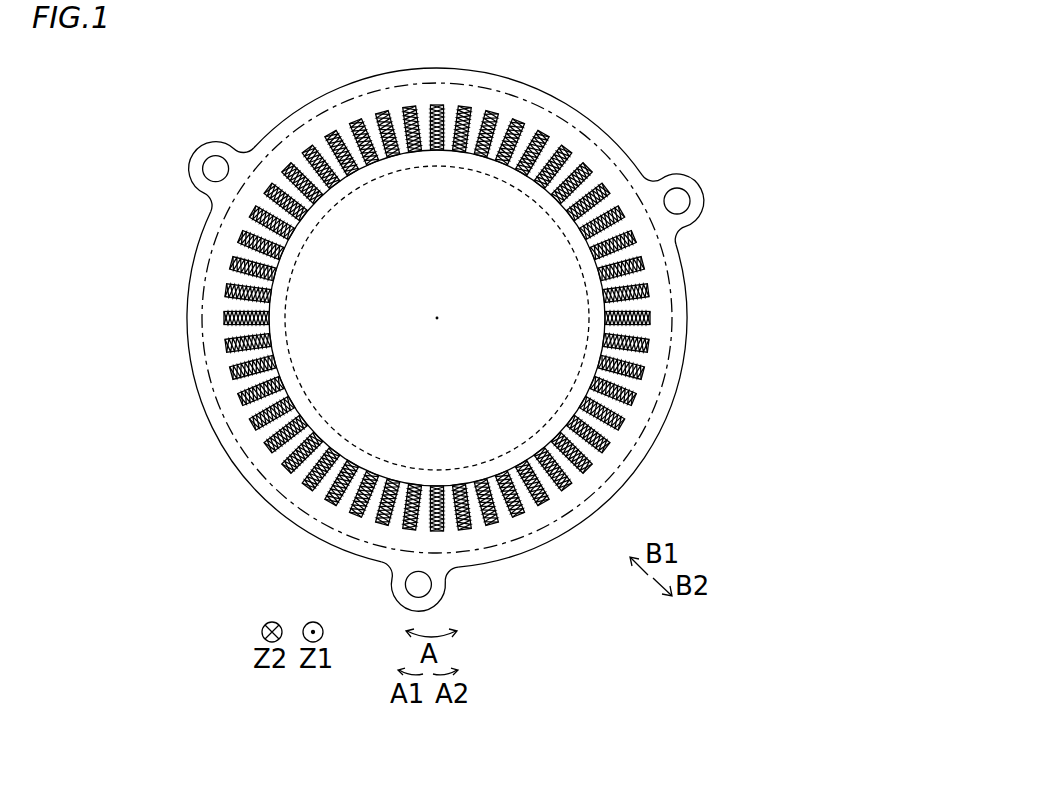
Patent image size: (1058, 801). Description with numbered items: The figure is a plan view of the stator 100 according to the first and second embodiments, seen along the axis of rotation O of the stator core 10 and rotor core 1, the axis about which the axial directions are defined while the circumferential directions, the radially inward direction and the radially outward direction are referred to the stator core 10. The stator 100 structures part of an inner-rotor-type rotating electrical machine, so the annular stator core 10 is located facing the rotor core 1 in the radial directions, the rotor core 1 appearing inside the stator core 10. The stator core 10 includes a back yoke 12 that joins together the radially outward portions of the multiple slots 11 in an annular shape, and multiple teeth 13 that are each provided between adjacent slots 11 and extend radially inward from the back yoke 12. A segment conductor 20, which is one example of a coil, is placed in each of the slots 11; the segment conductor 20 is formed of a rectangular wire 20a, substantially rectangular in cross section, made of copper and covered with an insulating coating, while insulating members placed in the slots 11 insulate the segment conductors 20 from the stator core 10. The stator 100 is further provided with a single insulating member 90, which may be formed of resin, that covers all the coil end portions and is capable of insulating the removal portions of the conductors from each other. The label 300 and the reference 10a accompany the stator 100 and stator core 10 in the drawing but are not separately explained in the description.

The rotor core 1 is at (410, 163).
The stator core 10 is at (693, 291).
The back yoke 10a is at (662, 331).
The slot 11 is at (599, 232).
The back yoke 12 is at (606, 247).
The tooth 13 is at (609, 267).
The segment conductor 20 is at (632, 430).
The rectangular wire 20a is at (532, 152).
The insulating member 90 is at (287, 133).
The stator 100 is at (122, 137).
The stator 300 is at (446, 377).
The axis of rotation O is at (437, 318).